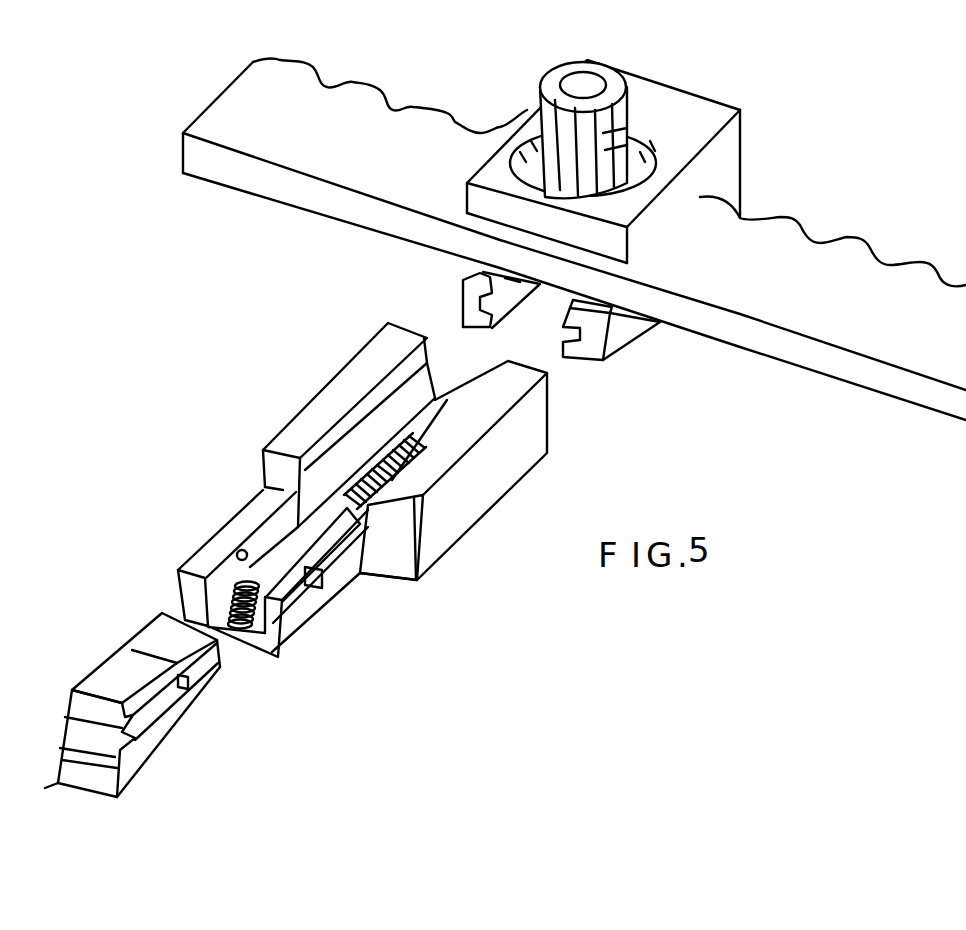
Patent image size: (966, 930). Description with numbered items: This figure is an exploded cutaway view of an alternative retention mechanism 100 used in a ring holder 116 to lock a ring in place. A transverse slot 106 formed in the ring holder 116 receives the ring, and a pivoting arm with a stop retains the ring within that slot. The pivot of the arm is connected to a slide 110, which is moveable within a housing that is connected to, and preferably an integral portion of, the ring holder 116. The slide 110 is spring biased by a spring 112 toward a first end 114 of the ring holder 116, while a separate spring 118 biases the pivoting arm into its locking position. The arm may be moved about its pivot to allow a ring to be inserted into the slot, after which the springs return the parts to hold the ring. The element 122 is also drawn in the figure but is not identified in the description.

The retention mechanism 100 is at (745, 98).
The transverse slot 106 is at (610, 318).
The slide 110 is at (293, 640).
The spring 112 is at (492, 328).
The first end 114 is at (740, 187).
The ring holder 116 is at (722, 168).
The spring 118 is at (253, 630).
The key member 122 is at (122, 675).